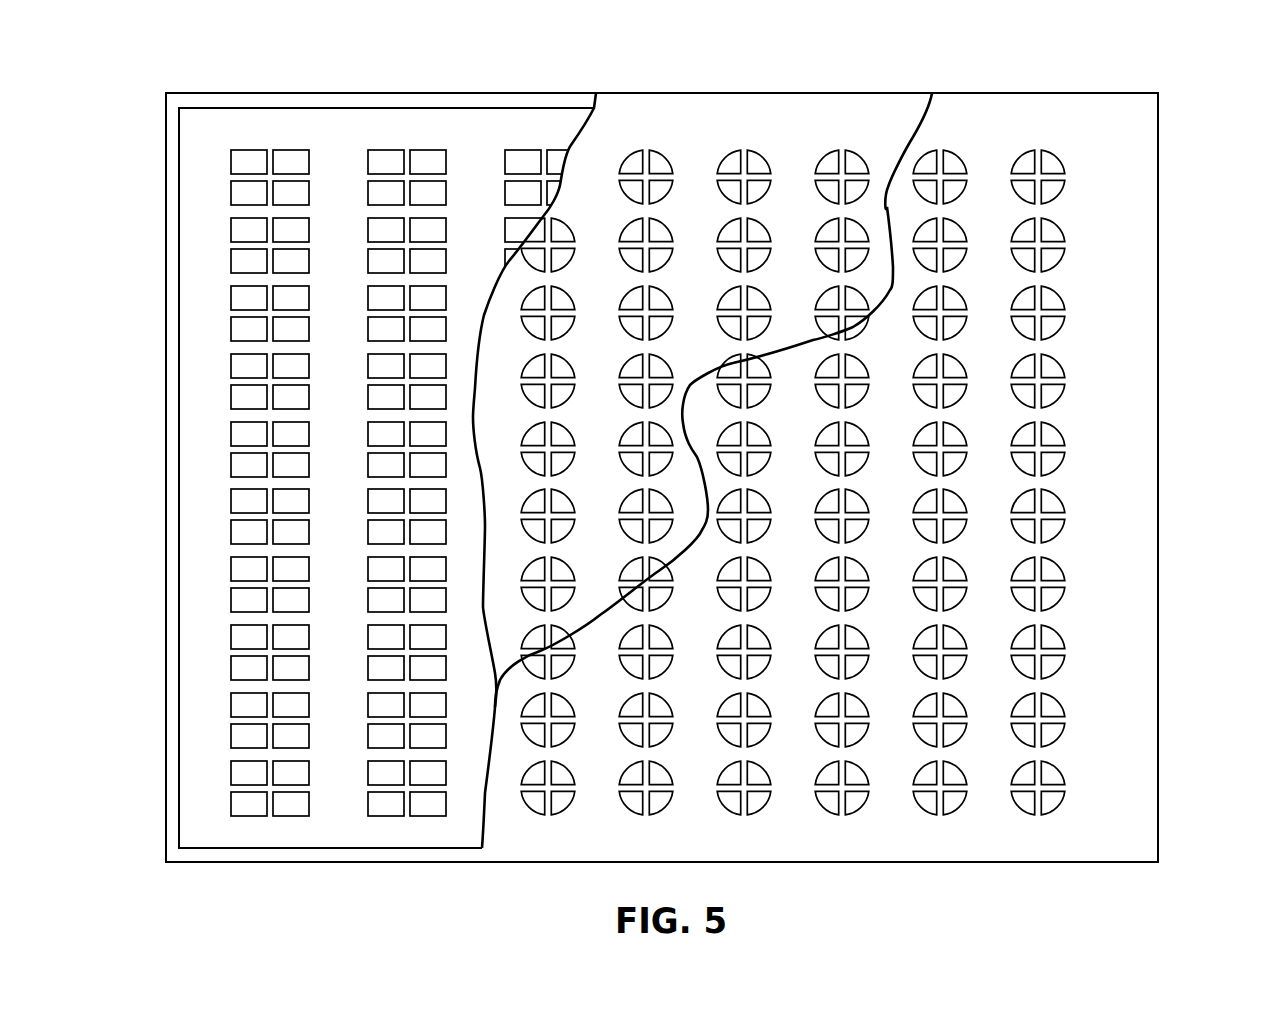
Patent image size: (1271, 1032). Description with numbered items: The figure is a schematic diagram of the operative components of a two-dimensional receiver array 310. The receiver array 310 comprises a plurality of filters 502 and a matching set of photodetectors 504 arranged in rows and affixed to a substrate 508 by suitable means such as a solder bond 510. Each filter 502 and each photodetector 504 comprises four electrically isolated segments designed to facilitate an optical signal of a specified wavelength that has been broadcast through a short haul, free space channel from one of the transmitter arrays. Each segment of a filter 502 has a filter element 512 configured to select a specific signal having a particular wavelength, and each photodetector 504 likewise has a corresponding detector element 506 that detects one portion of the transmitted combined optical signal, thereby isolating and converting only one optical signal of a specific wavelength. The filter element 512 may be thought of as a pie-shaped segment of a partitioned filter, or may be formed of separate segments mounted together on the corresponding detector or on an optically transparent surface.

The receiver array 310 is at (1158, 113).
The substrate 508 is at (305, 108).
The solder bond 510 is at (229, 397).
The detector element 506 is at (730, 160).
The photodetector 504 is at (822, 153).
The filter element 512 is at (1050, 253).
The filter 502 is at (1063, 503).